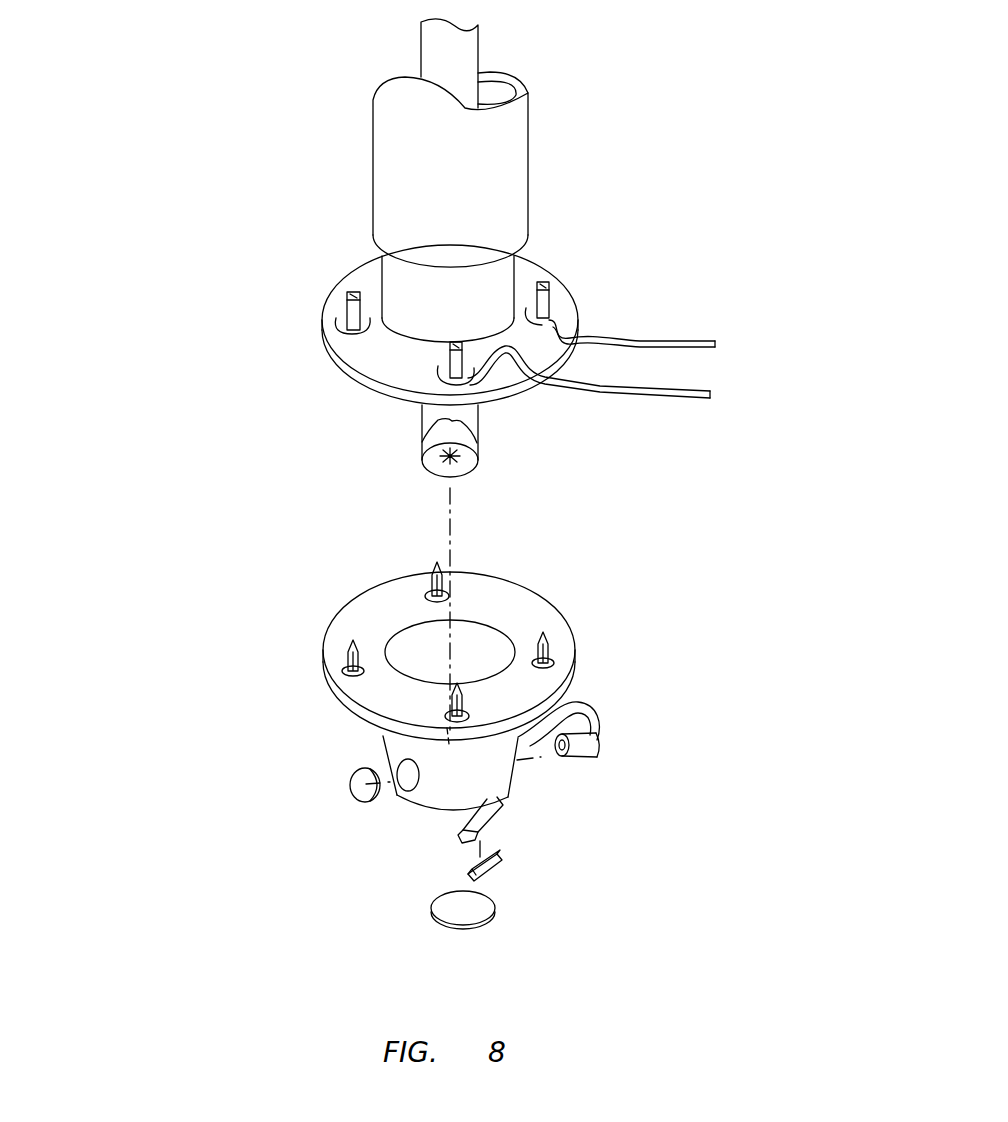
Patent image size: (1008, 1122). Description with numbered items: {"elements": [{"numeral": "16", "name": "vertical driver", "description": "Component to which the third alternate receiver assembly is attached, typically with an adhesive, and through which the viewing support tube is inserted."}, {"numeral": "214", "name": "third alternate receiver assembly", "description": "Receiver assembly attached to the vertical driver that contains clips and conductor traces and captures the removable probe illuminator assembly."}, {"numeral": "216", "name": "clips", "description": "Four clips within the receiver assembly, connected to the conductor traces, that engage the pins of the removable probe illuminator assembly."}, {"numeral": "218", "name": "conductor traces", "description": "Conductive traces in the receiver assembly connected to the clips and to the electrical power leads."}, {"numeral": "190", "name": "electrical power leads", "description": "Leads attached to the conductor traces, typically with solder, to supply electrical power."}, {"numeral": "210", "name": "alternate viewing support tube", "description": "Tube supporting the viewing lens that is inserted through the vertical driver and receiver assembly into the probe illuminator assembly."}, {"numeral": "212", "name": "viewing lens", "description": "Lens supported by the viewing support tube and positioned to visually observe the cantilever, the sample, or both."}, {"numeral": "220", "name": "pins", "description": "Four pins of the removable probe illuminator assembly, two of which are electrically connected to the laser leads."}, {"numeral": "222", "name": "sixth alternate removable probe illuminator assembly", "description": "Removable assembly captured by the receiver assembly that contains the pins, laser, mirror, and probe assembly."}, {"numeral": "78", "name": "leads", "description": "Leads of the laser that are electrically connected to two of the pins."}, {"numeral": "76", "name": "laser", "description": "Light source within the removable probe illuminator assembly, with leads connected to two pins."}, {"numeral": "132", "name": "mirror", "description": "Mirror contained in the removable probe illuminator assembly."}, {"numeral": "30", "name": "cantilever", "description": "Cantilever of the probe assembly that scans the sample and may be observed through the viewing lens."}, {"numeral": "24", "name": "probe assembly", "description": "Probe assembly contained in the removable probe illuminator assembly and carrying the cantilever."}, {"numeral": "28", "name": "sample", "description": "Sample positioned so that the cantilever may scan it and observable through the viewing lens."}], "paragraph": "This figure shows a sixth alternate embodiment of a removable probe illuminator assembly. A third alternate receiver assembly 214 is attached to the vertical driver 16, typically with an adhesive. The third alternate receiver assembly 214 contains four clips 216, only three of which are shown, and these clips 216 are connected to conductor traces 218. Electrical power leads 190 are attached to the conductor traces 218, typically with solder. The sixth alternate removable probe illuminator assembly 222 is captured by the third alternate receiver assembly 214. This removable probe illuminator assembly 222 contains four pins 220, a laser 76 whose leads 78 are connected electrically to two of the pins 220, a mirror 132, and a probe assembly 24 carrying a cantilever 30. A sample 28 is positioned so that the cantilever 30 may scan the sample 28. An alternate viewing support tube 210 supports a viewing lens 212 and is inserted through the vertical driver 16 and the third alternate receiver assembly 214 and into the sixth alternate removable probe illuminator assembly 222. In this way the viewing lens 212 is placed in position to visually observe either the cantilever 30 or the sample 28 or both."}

The tubular member 16 is at (530, 150).
The upper connector assembly 214 is at (577, 264).
The terminal pins 216 is at (536, 294).
The lead wire 218 is at (567, 313).
The lead wires 190 is at (718, 392).
The stem 210 is at (482, 427).
The broken end of stem 212 is at (475, 473).
The contact pins 220 is at (364, 652).
The lower connector assembly 222 is at (288, 669).
The tube 78 is at (593, 703).
The fitting 76 is at (587, 755).
The plug 132 is at (350, 786).
The tab 30 is at (466, 881).
The sensor assembly 24 is at (507, 868).
The disc 28 is at (493, 918).